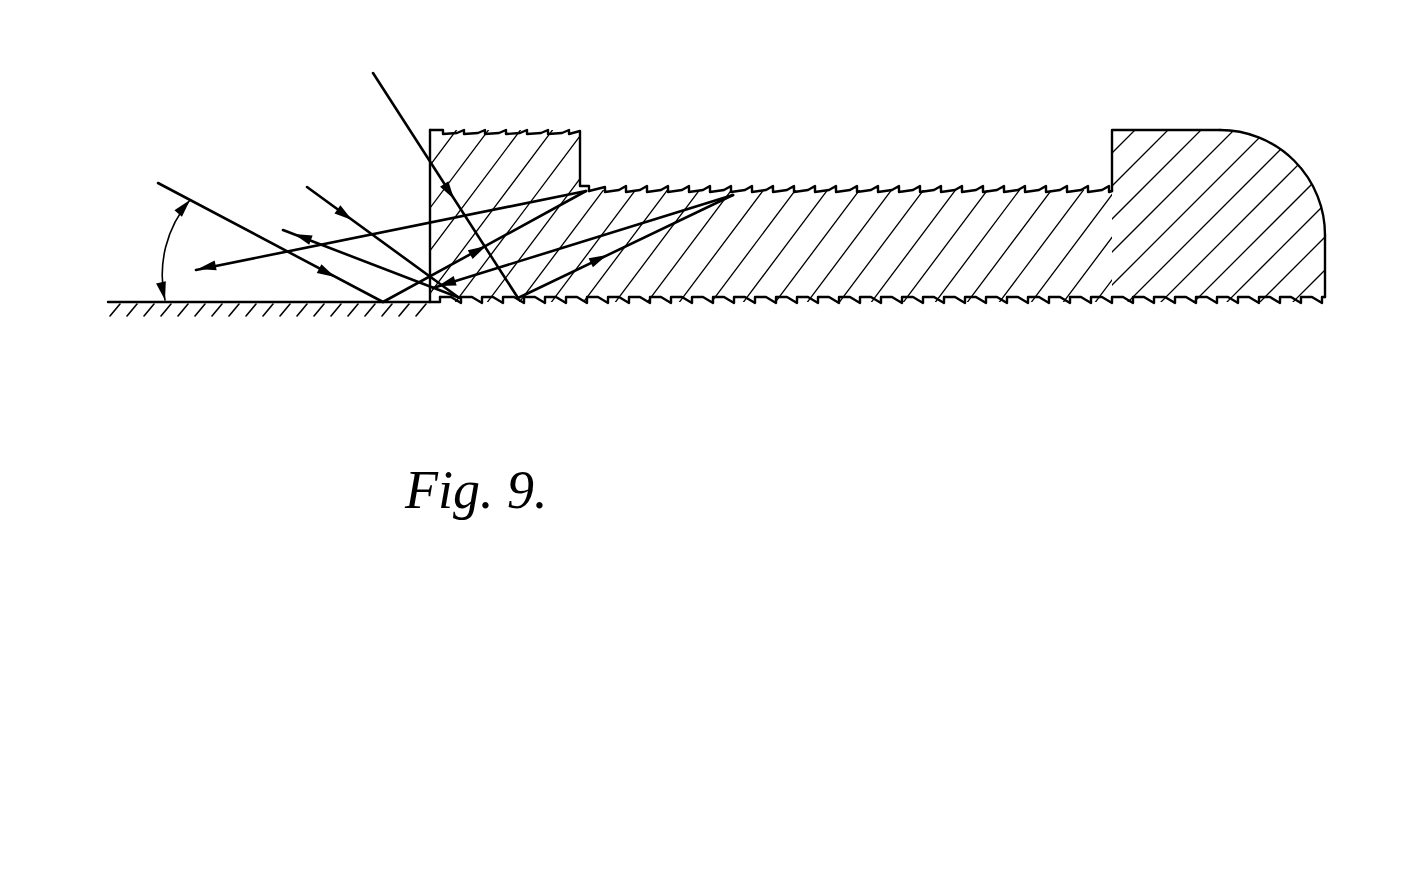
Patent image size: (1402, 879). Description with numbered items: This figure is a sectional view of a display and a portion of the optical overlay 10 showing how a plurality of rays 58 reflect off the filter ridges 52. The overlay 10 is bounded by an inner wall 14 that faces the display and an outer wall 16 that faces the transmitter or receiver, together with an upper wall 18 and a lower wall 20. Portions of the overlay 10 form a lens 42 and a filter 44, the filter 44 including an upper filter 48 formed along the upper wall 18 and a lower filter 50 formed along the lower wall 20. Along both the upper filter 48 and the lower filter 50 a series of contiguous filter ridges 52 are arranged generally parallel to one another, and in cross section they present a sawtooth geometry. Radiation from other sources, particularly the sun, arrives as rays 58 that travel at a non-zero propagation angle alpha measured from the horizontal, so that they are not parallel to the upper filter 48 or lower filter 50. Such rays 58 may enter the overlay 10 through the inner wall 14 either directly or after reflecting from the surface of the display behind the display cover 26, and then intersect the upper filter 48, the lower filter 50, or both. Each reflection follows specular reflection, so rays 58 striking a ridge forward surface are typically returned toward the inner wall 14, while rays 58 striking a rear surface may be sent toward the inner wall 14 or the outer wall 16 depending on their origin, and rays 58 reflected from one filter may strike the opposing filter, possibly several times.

The optical overlay 10 is at (862, 221).
The inner wall 14 is at (401, 216).
The outer wall 16 is at (1296, 179).
The upper wall 18 is at (1218, 183).
The lower wall 20 is at (882, 330).
The display cover 26 is at (242, 310).
The lens 42 is at (686, 59).
The filter 44 is at (1043, 65).
The upper filter 48 is at (541, 128).
The lower filter 50 is at (959, 385).
The filter ridges 52 is at (882, 254).
The rays 58 is at (435, 187).